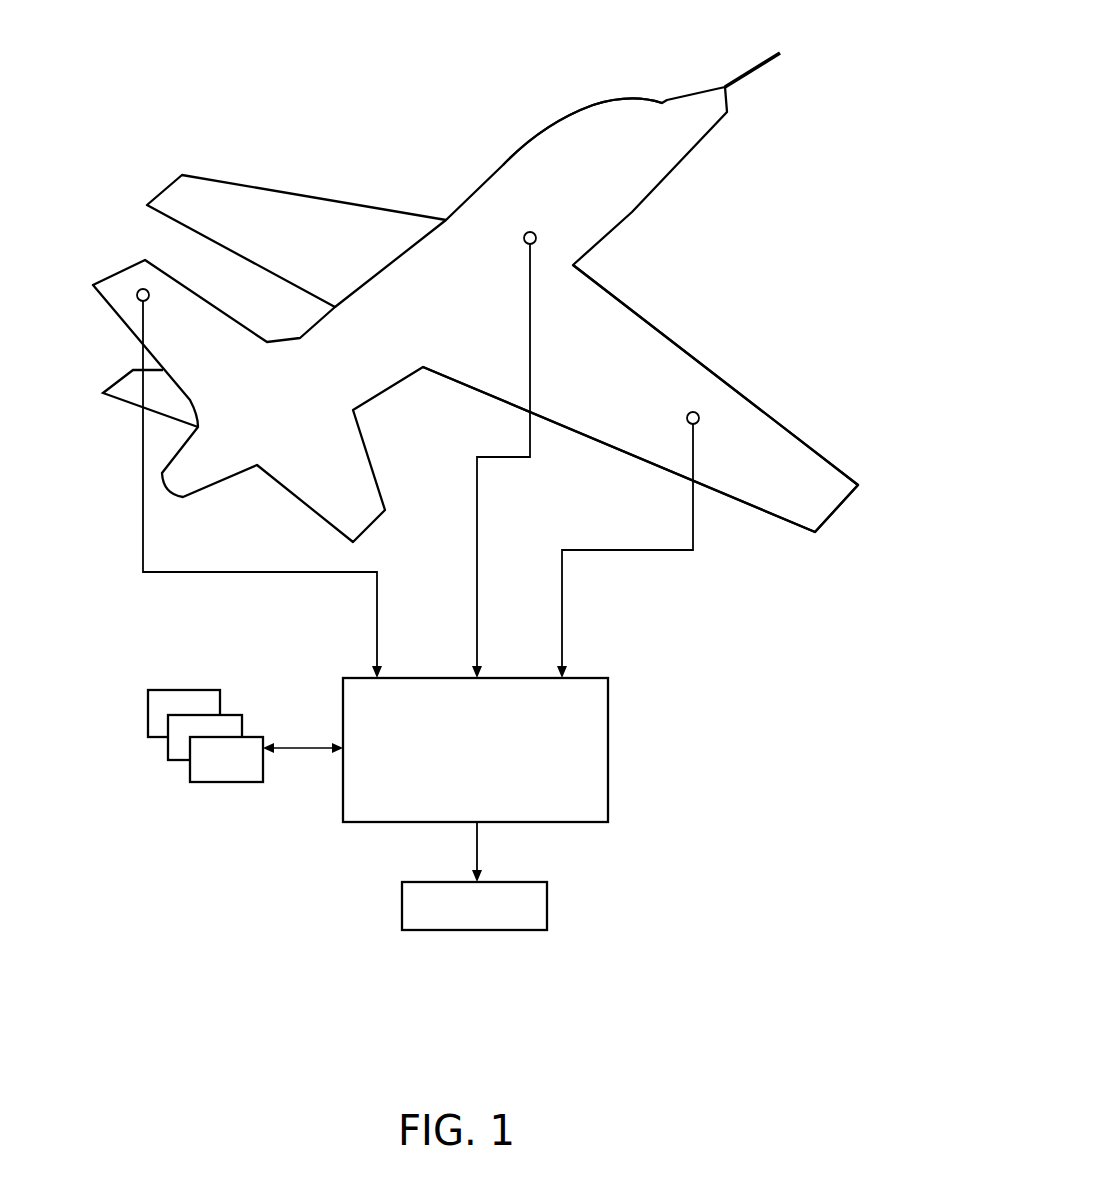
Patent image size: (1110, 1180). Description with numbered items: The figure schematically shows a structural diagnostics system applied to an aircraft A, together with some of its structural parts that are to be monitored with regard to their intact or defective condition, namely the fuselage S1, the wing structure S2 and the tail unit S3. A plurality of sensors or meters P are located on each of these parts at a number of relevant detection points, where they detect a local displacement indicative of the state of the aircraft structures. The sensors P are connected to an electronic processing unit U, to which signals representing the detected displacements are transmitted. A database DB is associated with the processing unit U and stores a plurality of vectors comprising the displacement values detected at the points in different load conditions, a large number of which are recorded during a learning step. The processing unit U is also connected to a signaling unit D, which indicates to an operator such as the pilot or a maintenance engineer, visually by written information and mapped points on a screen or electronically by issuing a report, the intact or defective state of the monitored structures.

The aircraft A is at (420, 196).
The fuselage S1 is at (550, 185).
The wing structure S2 is at (663, 388).
The tail unit S3 is at (197, 307).
The sensors or meters P is at (137, 297).
The electronic processing unit U is at (353, 708).
The database DB is at (135, 700).
The signaling unit D is at (533, 912).